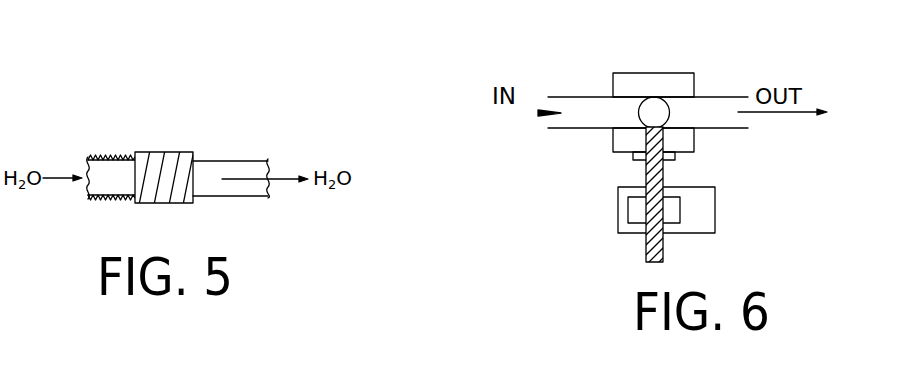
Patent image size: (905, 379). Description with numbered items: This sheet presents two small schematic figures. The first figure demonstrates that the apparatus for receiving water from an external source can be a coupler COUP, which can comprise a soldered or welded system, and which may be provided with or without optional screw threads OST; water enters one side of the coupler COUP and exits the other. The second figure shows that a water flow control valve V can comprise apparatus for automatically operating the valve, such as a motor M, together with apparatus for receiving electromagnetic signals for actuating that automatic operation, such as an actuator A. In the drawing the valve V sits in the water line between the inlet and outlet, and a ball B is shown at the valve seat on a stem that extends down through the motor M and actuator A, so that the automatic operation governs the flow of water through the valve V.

In FIG. 5, the optional screw threads OST is at (107, 145).
In FIG. 5, the coupler COUP is at (201, 141).
In FIG. 6, the water flow control valve V is at (478, 53).
In FIG. 6, the ball B is at (673, 94).
In FIG. 6, the motor M is at (678, 190).
In FIG. 6, the actuator A is at (724, 211).